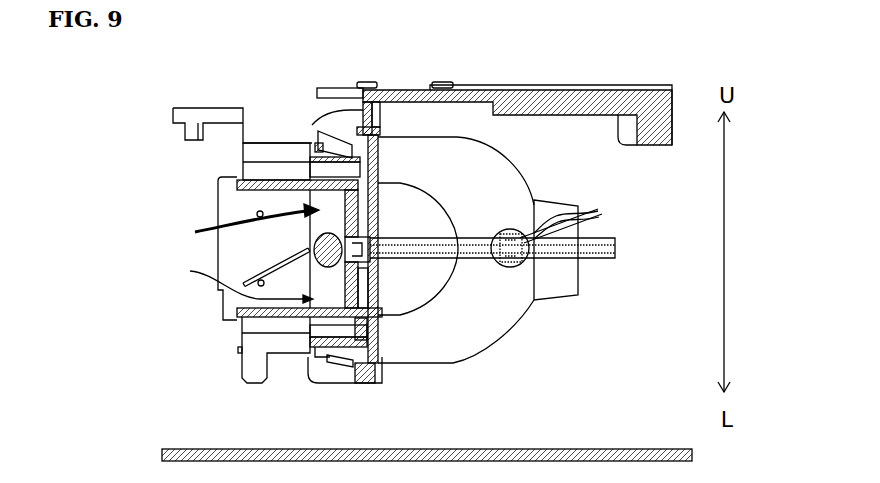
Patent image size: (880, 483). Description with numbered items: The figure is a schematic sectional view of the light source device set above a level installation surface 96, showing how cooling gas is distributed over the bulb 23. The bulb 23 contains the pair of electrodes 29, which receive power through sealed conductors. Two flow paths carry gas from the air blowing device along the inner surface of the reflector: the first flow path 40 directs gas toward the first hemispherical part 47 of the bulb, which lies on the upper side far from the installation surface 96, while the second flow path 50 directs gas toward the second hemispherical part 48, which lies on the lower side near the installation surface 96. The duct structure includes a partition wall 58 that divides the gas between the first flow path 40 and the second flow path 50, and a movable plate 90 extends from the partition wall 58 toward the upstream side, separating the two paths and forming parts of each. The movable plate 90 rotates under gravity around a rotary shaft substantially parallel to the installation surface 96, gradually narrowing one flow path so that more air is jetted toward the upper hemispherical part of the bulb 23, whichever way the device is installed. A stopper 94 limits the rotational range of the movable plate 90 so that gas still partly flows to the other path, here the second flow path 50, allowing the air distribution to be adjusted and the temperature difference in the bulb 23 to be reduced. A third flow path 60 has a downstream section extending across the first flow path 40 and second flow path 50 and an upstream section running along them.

The bulb 23 is at (578, 245).
The electrodes 29 is at (597, 212).
The first flow path 40 is at (250, 212).
The first hemispherical part 47 is at (512, 230).
The second hemispherical part 48 is at (516, 266).
The second flow path 50 is at (330, 300).
The partition wall 58 is at (338, 237).
The third flow path 60 is at (392, 232).
The movable plate 90 is at (263, 250).
The stopper 94 is at (263, 250).
The installation surface 96 is at (640, 449).